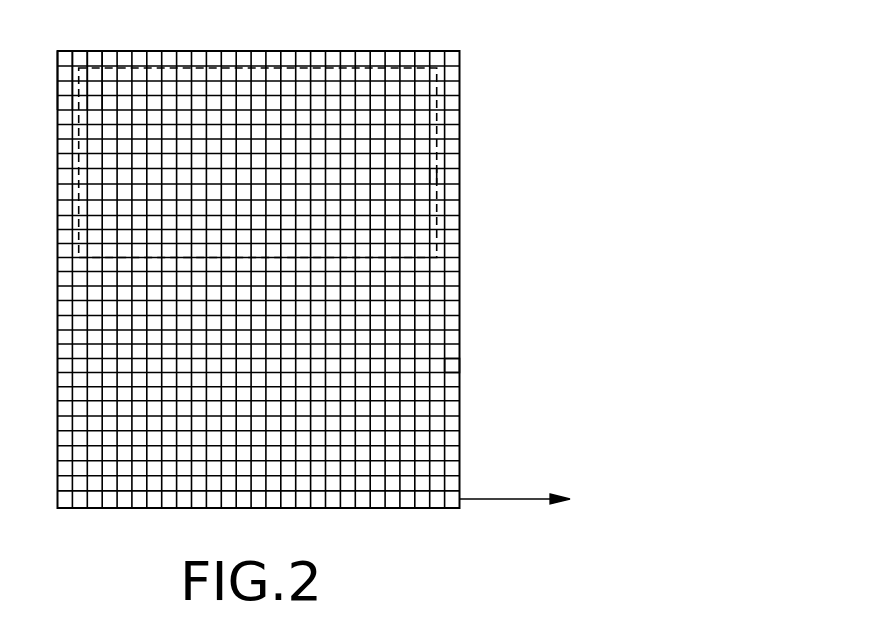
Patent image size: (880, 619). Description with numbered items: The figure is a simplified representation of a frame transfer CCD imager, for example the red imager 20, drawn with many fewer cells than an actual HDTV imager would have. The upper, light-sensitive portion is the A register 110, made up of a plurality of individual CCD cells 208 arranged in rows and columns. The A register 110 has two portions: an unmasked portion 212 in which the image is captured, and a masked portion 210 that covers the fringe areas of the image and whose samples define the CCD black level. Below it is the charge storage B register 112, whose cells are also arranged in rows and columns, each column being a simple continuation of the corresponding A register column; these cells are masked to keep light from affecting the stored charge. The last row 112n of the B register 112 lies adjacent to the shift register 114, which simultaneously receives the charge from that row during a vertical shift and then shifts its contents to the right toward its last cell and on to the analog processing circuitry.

The red imager 20 is at (345, 49).
The A register 110 is at (457, 148).
The CCD cells 208 is at (107, 54).
The masked portion 210 is at (447, 102).
The unmasked portion 212 is at (445, 173).
The B register 112 is at (452, 362).
The last row 112n is at (453, 485).
The shift register 114 is at (280, 508).